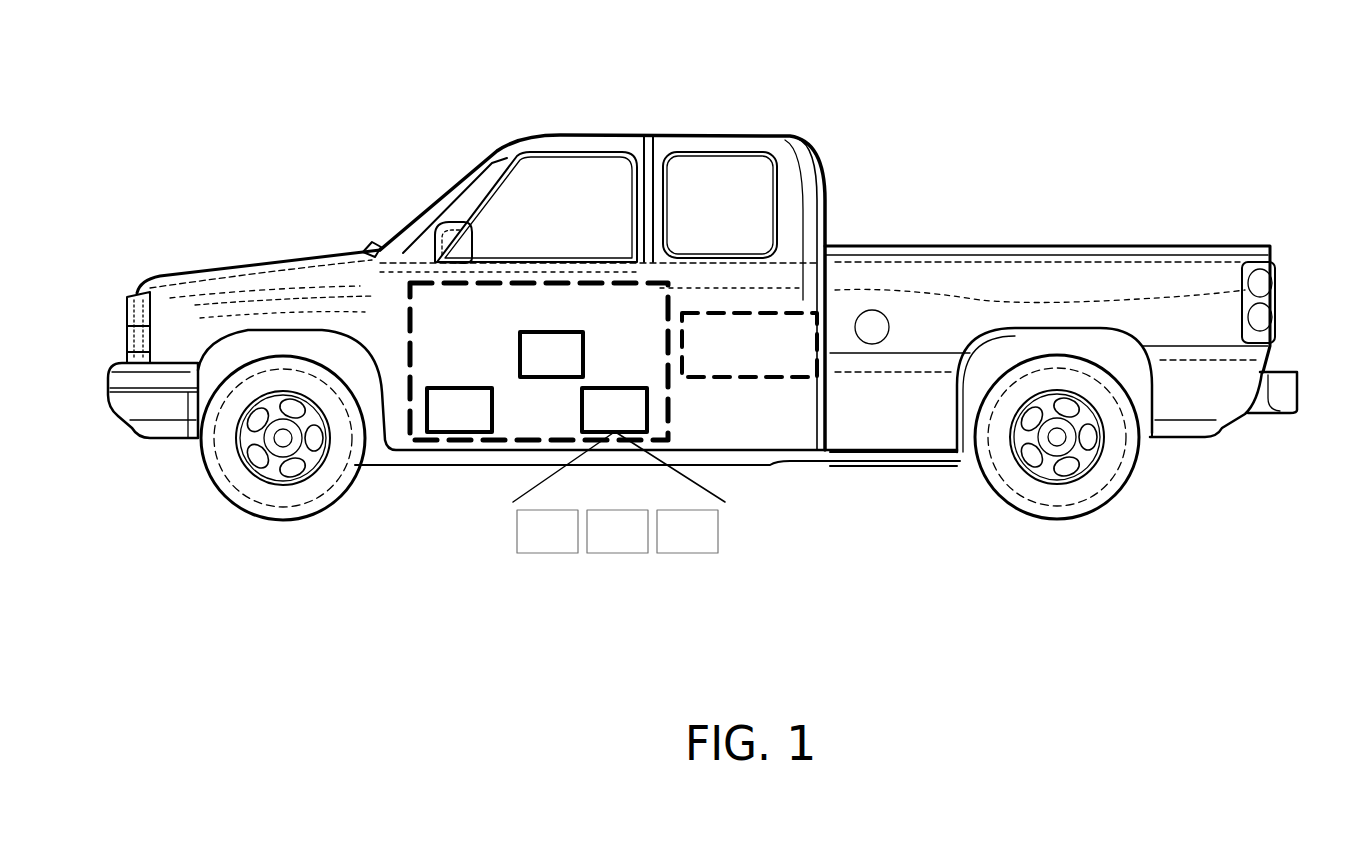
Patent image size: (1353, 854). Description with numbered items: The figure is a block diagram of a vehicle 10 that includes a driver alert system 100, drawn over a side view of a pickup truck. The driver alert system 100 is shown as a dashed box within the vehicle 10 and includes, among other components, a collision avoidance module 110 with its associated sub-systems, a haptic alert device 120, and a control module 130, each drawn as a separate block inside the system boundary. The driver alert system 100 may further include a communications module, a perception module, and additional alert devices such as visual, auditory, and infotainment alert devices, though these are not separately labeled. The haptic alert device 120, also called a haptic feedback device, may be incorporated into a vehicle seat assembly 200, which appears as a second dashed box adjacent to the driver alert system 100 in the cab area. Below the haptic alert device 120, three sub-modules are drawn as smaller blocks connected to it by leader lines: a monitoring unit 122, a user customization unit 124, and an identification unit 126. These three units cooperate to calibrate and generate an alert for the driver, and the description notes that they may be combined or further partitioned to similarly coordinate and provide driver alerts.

The vehicle 10 is at (423, 172).
The driver alert system 100 is at (539, 361).
The collision avoidance module 110 is at (551, 354).
The haptic alert device 120 is at (619, 445).
The monitoring unit 122 is at (547, 531).
The user customization unit 124 is at (617, 531).
The identification unit 126 is at (687, 531).
The control module 130 is at (459, 410).
The vehicle seat assembly 200 is at (749, 345).